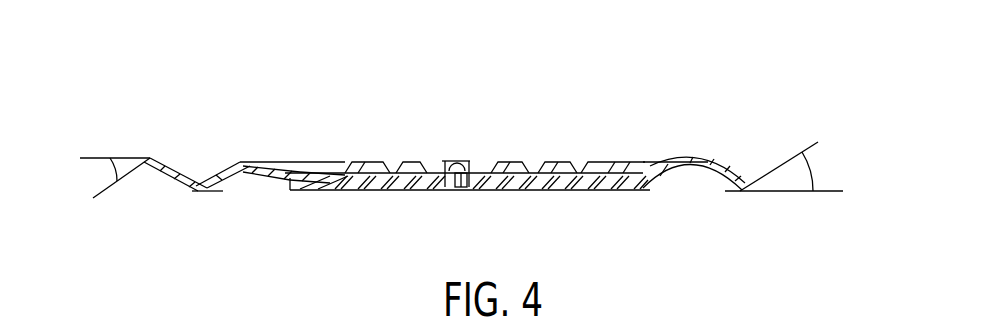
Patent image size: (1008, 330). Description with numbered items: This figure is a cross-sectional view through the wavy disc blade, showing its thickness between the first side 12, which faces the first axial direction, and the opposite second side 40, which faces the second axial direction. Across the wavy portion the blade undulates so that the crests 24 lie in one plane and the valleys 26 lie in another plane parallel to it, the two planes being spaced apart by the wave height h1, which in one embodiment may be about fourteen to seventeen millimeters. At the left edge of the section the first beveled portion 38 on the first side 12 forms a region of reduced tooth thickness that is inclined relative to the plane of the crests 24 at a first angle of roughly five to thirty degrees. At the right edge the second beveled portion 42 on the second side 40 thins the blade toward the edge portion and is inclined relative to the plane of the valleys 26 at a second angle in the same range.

The first side 12 is at (480, 173).
The crests 24 is at (413, 162).
The valleys 26 is at (380, 192).
The first beveled portion 38 is at (150, 158).
The second side 40 is at (490, 188).
The second beveled portion 42 is at (740, 191).
The height of the waves h1 is at (452, 190).